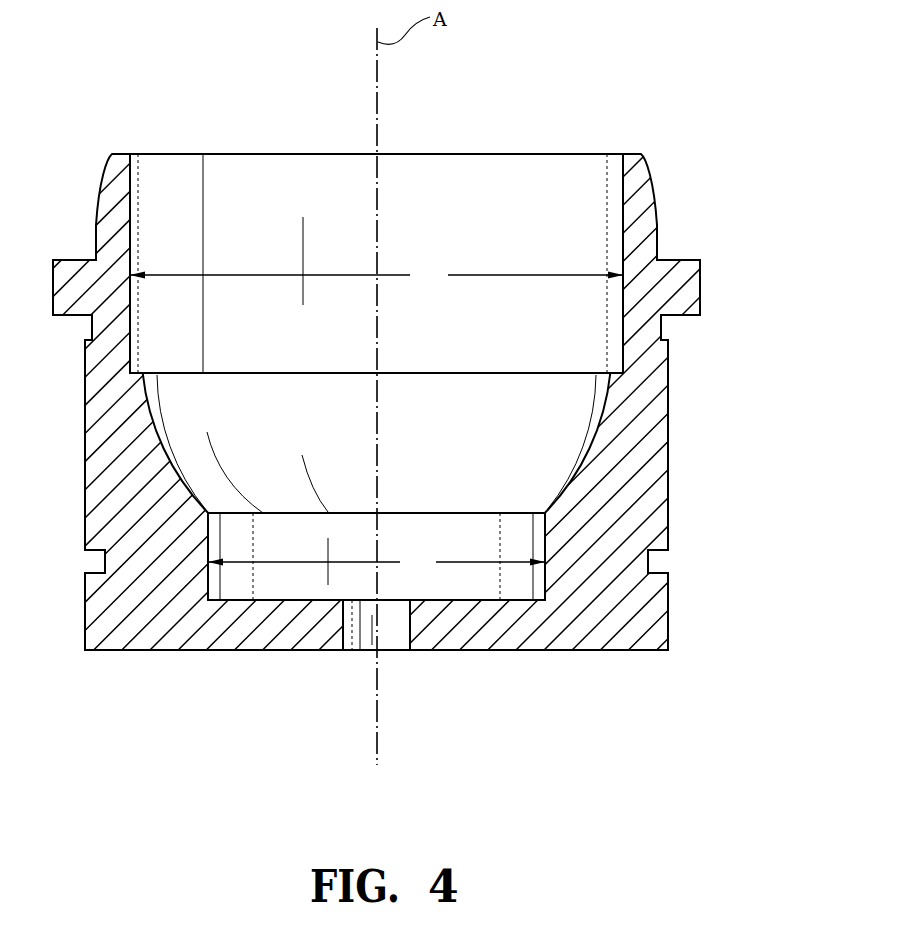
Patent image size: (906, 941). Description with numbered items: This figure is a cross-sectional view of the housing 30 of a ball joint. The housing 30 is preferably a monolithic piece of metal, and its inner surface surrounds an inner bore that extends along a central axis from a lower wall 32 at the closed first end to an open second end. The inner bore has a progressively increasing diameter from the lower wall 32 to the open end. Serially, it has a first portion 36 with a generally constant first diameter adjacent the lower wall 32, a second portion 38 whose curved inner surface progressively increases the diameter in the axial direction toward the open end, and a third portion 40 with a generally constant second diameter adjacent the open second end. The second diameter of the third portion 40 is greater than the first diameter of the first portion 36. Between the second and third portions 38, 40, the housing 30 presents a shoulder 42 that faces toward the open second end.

The housing 30 is at (568, 83).
The lower wall 32 is at (521, 625).
The first portion 36 is at (546, 600).
The second portion 38 is at (546, 513).
The third portion 40 is at (641, 154).
The shoulder 42 is at (141, 373).